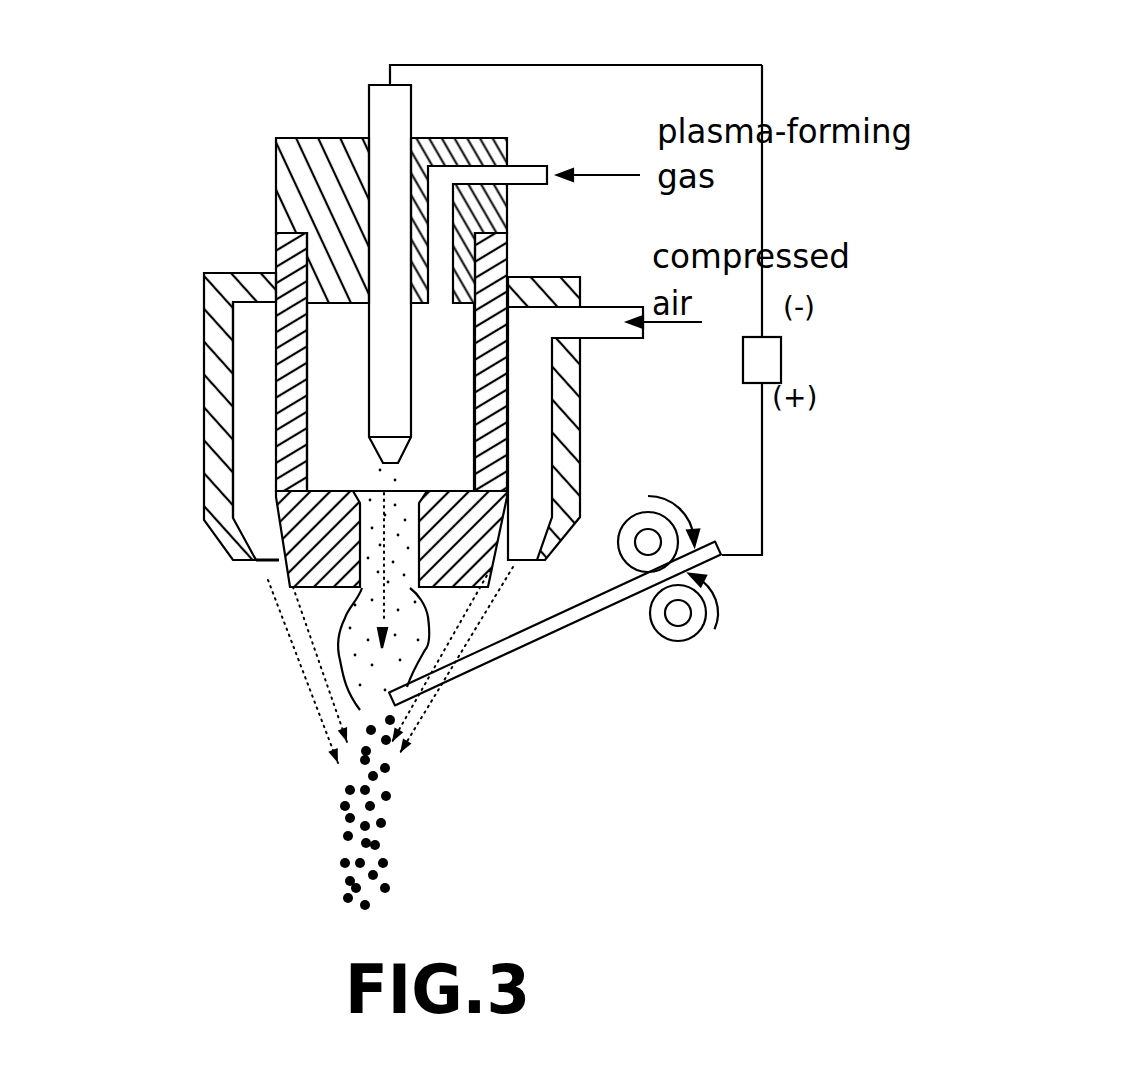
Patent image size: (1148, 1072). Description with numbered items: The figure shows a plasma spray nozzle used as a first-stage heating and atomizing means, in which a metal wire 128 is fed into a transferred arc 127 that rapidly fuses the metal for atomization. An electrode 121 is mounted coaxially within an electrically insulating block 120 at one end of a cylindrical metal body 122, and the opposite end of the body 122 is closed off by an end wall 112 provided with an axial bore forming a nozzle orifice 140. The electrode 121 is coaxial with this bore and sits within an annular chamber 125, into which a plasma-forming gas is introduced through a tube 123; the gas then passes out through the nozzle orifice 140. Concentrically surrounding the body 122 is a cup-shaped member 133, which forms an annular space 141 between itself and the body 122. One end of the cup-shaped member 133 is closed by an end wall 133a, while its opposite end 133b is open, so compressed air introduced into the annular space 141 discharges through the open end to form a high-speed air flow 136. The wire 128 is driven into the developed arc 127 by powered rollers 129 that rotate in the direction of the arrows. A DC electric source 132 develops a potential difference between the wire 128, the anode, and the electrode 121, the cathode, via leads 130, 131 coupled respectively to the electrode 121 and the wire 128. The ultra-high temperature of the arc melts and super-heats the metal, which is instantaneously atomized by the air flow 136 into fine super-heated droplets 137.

The end wall 112 is at (307, 528).
The electrically insulating block 120 is at (320, 137).
The electrode 121 is at (377, 117).
The cylindrical metal body 122 is at (287, 260).
The tube 123 is at (527, 170).
The annular chamber 125 is at (335, 363).
The transferred arc 127 is at (380, 617).
The wire 128 is at (507, 662).
The powered rollers 129 is at (692, 643).
The lead 130 is at (627, 64).
The lead 131 is at (767, 520).
The DC electric source 132 is at (781, 365).
The cup-shaped member 133 is at (573, 430).
The end wall 133a is at (266, 272).
The open end 133b is at (267, 563).
The high-speed air flow 136 is at (420, 720).
The atomized droplets 137 is at (372, 863).
The nozzle orifice 140 is at (376, 570).
The annular space 141 is at (255, 403).